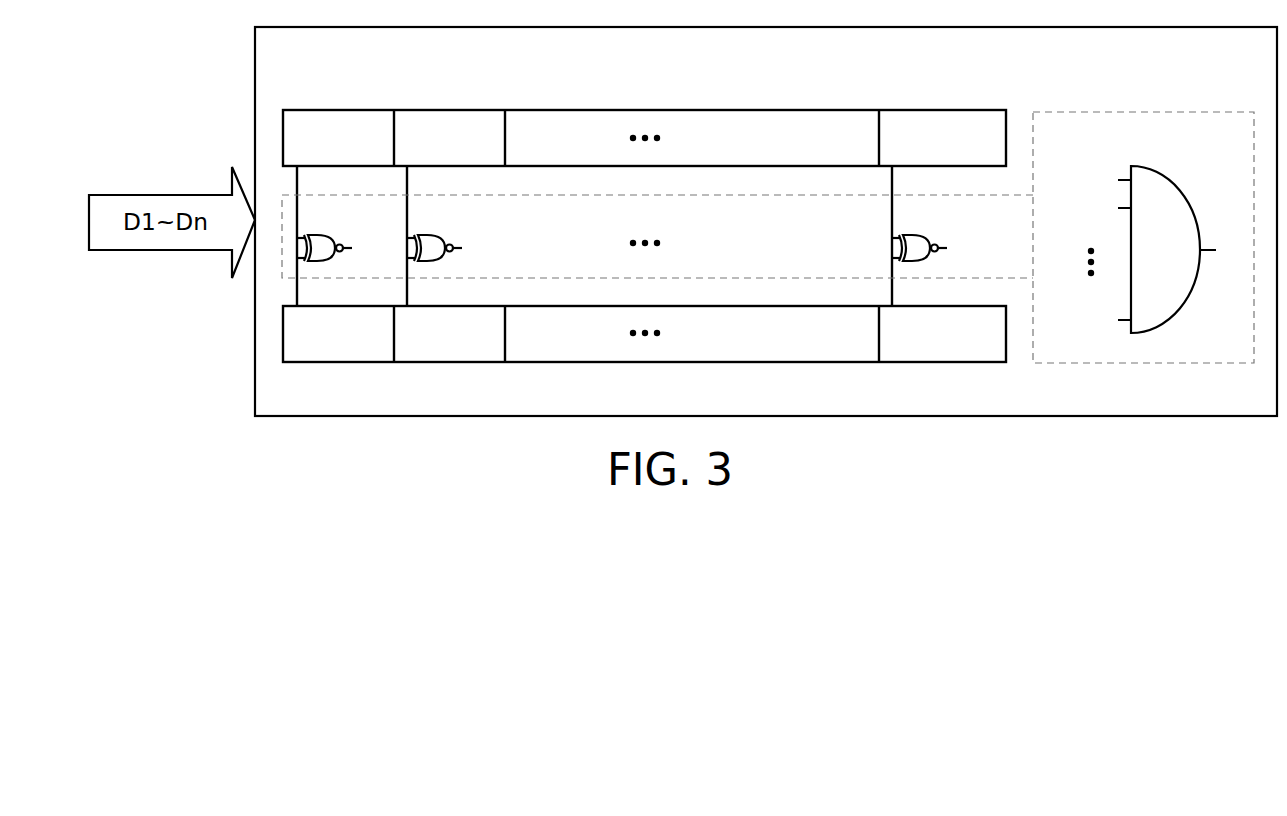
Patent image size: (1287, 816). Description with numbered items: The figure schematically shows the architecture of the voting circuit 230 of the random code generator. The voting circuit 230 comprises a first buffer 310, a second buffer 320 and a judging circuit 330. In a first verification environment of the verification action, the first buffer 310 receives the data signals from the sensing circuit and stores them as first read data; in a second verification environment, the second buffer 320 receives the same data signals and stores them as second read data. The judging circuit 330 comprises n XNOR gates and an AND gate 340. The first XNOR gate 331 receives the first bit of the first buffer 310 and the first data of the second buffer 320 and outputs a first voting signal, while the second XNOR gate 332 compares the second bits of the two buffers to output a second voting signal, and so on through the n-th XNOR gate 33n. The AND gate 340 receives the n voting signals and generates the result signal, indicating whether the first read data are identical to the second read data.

The voting circuit 230 is at (677, 68).
The first buffer 310 is at (792, 158).
The second buffer 320 is at (794, 357).
The judging circuit 330 is at (1236, 152).
The first XNOR gate 331 is at (311, 239).
The second XNOR gate 332 is at (421, 239).
The n-th XNOR gate 33n is at (911, 239).
The AND gate 340 is at (1189, 265).